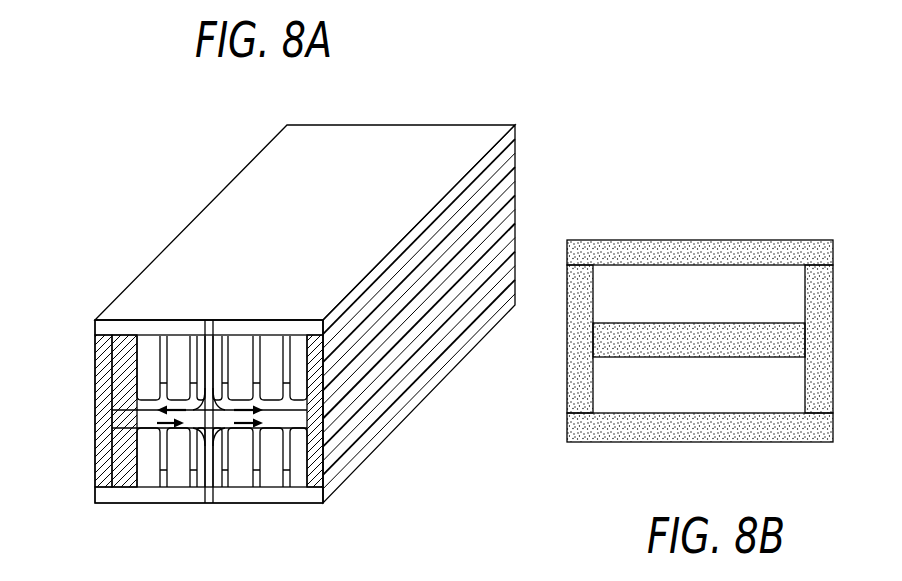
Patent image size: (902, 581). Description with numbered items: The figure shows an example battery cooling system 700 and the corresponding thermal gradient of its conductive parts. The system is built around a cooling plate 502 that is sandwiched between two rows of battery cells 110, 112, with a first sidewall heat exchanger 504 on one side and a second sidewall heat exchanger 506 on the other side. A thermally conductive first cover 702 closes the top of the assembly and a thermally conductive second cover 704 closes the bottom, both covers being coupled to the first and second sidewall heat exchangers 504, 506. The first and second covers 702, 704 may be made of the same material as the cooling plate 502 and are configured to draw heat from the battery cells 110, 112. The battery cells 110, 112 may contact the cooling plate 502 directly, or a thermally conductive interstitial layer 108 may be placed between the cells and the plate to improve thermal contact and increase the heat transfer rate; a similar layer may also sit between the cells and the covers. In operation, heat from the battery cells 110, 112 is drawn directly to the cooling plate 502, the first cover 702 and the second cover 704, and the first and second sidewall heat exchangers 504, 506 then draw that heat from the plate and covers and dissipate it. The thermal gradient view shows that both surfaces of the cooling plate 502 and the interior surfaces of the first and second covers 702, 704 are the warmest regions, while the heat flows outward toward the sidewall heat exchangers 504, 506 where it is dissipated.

In FIG. 8A, the battery cooling system 700 is at (133, 210).
In FIG. 8A, the first cover 702 is at (240, 202).
In FIG. 8B, the first cover 702 is at (742, 240).
In FIG. 8A, the second cover 704 is at (270, 502).
In FIG. 8B, the second cover 704 is at (798, 440).
In FIG. 8A, the first sidewall heat exchanger 504 is at (105, 362).
In FIG. 8B, the first sidewall heat exchanger 504 is at (567, 350).
In FIG. 8A, the second sidewall heat exchanger 506 is at (493, 232).
In FIG. 8B, the second sidewall heat exchanger 506 is at (833, 335).
In FIG. 8A, the cooling plate 502 is at (120, 418).
In FIG. 8B, the cooling plate 502 is at (707, 323).
In FIG. 8A, the battery cells 110 is at (135, 378).
In FIG. 8A, the battery cells 112 is at (240, 472).
In FIG. 8A, the thermally conductive interstitial layer 108 is at (292, 403).